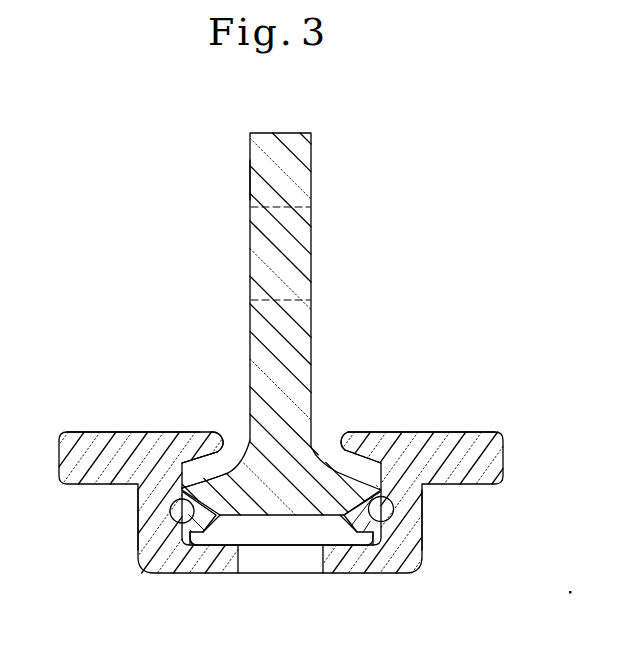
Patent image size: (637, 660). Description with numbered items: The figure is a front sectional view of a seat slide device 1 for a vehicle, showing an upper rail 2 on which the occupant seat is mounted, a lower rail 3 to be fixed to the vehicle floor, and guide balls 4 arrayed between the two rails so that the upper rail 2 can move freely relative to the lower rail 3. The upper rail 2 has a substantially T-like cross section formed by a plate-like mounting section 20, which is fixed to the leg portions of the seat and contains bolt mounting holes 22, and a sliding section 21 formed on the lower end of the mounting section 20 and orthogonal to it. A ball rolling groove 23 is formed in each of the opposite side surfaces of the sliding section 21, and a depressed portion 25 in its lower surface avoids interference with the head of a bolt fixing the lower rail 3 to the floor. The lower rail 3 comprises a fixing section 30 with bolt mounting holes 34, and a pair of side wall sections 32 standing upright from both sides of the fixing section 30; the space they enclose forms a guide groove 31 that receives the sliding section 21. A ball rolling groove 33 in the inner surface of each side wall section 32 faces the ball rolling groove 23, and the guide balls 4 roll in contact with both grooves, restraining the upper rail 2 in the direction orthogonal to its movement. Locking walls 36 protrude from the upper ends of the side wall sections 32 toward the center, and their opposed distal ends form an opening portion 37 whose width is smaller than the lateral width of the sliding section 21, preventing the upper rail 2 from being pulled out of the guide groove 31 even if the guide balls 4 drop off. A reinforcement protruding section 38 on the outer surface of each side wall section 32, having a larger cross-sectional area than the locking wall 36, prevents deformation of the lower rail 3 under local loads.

The seat slide device 1 is at (298, 454).
The upper rail 2 is at (298, 324).
The lower rail 3 is at (277, 499).
The guide balls 4 is at (174, 518).
The mounting section 20 is at (250, 178).
The sliding section 21 is at (318, 497).
The bolt mounting holes 22 is at (277, 300).
The ball rolling groove 23 is at (193, 547).
The depressed portion 25 is at (272, 518).
The fixing section 30 is at (192, 548).
The guide groove 31 is at (190, 466).
The side wall sections 32 is at (148, 520).
The ball rolling groove 33 is at (172, 503).
The bolt mounting holes 34 is at (306, 565).
The locking walls 36 is at (205, 447).
The opening portion 37 is at (230, 463).
The reinforcement protruding section 38 is at (85, 445).